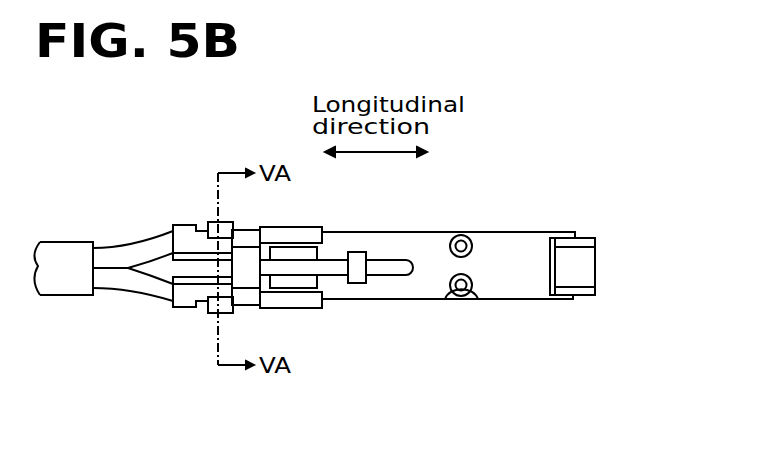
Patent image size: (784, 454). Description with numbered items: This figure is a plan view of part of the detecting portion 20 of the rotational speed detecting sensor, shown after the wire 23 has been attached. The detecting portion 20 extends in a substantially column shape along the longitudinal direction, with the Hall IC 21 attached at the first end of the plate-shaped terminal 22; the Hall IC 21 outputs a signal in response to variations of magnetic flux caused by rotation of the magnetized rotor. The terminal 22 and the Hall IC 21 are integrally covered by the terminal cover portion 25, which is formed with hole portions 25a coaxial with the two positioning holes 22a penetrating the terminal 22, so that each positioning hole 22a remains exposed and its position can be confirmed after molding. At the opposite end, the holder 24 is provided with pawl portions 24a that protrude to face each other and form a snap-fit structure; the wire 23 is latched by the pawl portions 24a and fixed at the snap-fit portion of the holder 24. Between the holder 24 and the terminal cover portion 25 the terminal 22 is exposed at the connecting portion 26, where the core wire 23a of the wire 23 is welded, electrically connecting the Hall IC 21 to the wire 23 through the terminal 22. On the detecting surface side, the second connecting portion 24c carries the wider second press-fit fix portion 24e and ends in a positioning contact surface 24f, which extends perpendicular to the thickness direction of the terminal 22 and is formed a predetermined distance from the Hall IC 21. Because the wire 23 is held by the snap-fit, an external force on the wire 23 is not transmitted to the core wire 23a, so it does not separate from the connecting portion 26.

The detecting portion 20 is at (106, 247).
The Hall IC 21 is at (577, 238).
The terminal 22 is at (176, 226).
The positioning hole 22a is at (471, 248).
The wire 23 is at (148, 245).
The core wire 23a is at (288, 240).
The holder 24 is at (250, 229).
The pawl portion 24a is at (209, 230).
The second connecting portion 24c is at (336, 276).
The second press-fit fix portion 24e is at (355, 254).
The positioning contact surface 24f is at (428, 256).
The terminal cover portion 25 is at (540, 233).
The hole portion 25a is at (452, 237).
The connecting portion 26 is at (308, 227).